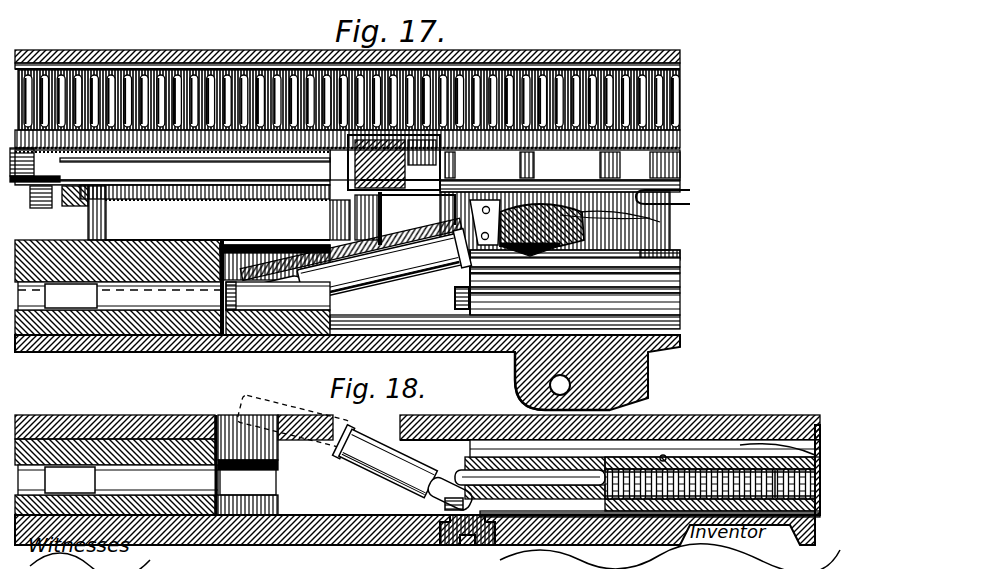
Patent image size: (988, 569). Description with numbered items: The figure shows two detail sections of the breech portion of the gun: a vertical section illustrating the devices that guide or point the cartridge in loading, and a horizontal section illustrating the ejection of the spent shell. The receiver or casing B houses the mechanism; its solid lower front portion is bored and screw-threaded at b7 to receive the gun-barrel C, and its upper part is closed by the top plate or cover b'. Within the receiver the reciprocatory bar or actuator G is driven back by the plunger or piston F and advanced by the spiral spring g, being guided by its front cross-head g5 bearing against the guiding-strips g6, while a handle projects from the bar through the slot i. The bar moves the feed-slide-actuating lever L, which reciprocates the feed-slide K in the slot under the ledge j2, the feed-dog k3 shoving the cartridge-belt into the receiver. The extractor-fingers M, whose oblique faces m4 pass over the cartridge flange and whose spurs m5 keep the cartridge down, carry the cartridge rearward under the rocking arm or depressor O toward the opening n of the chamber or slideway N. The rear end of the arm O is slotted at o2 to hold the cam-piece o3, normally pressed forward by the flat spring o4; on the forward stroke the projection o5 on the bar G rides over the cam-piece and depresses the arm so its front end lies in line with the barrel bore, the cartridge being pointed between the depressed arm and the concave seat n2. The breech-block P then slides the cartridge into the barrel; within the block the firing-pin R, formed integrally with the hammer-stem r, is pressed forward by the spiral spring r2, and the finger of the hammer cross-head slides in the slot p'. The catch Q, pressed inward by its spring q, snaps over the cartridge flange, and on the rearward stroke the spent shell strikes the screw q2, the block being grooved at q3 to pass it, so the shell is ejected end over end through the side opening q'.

In FIG. 17, the plunger or piston F is at (60, 62).
In FIG. 17, the top plate or cover b' is at (347, 41).
In FIG. 17, the spiral spring g is at (660, 97).
In FIG. 17, the guiding-strips g6 is at (680, 135).
In FIG. 17, the front guide or cross-head g5 is at (440, 162).
In FIG. 17, the reciprocatory bar or actuator G is at (505, 171).
In FIG. 17, the feed-slide-actuating lever L is at (172, 175).
In FIG. 17, the feed-slide K is at (32, 191).
In FIG. 17, the feed-dog k3 is at (40, 213).
In FIG. 17, the horizontal ledge or projection j2 is at (95, 220).
In FIG. 17, the oblique faces of the extractor-fingers m4 is at (240, 232).
In FIG. 17, the spurs or shoulders m5 is at (325, 220).
In FIG. 17, the opening n is at (275, 259).
In FIG. 17, the extractor-fingers M is at (401, 190).
In FIG. 17, the slot or recess o2 is at (542, 228).
In FIG. 17, the cam-piece or wiper o3 is at (555, 221).
In FIG. 17, the flat spring o4 is at (530, 225).
In FIG. 17, the projection or spline o5 is at (666, 222).
In FIG. 17, the opening in the side of the receiver q' is at (605, 224).
In FIG. 18, the opening in the side of the receiver q' is at (610, 411).
In FIG. 17, the slot i is at (655, 197).
In FIG. 17, the slot p' is at (678, 245).
In FIG. 17, the slot or groove in the breech-block q3 is at (660, 286).
In FIG. 18, the slot or groove in the breech-block q3 is at (478, 527).
In FIG. 17, the breech-block P is at (660, 316).
In FIG. 18, the breech-block P is at (520, 465).
In FIG. 17, the rocking arm or depressor O is at (355, 267).
In FIG. 17, the catch Q is at (455, 300).
In FIG. 18, the catch Q is at (682, 455).
In FIG. 17, the chamber or slideway N is at (144, 315).
In FIG. 18, the chamber or slideway N is at (175, 465).
In FIG. 17, the concave seat or guide n2 is at (232, 338).
In FIG. 18, the concave seat or guide n2 is at (357, 456).
In FIG. 17, the screw-threaded bore b7 is at (150, 340).
In FIG. 18, the screw-threaded bore b7 is at (205, 515).
In FIG. 17, the gun-barrel C is at (50, 345).
In FIG. 17, the receiver or casing B is at (536, 381).
In FIG. 18, the receiver or casing B is at (417, 472).
In FIG. 18, the firing-pin R is at (630, 452).
In FIG. 18, the hammer-stem r is at (708, 462).
In FIG. 18, the spring q is at (777, 415).
In FIG. 18, the spiral spring r2 is at (778, 468).
In FIG. 18, the screw q2 is at (447, 510).